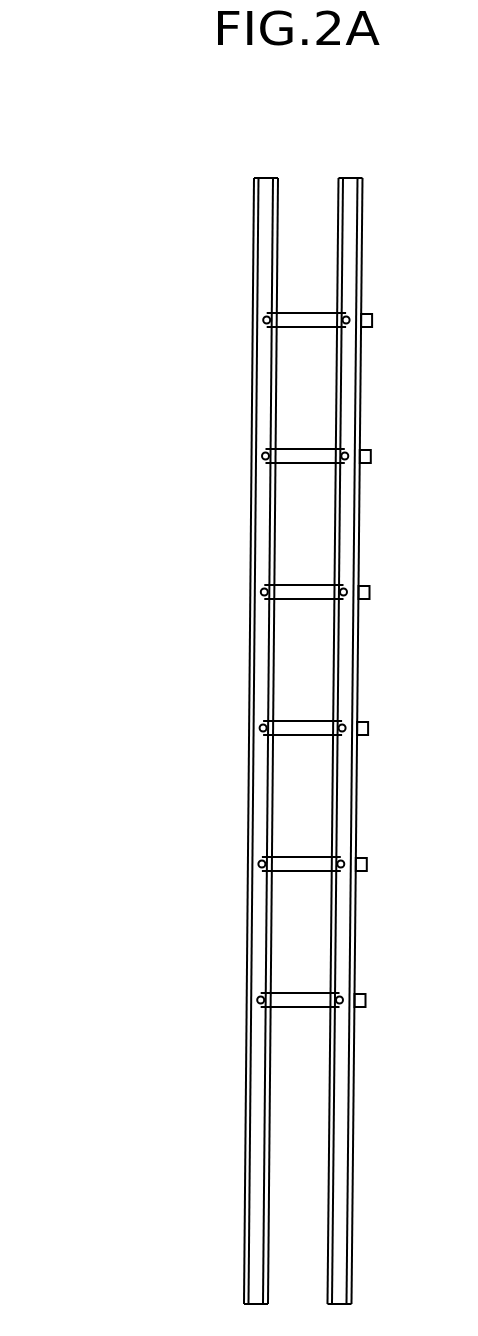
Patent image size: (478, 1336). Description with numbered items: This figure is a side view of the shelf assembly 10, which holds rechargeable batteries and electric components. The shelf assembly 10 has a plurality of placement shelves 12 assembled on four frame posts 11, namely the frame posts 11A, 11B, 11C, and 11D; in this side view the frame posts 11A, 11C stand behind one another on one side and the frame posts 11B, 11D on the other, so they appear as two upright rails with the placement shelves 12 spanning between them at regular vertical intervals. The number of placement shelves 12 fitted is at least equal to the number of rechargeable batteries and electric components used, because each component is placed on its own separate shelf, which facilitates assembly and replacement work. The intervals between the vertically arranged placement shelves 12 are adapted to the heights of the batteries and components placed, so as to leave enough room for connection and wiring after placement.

The shelf assembly 10 is at (147, 162).
The frame posts 11 is at (438, 125).
The frame post 11A is at (267, 183).
The frame post 11C is at (261, 741).
The frame post 11B is at (350, 182).
The frame post 11D is at (345, 741).
The placement shelves 12 is at (372, 321).